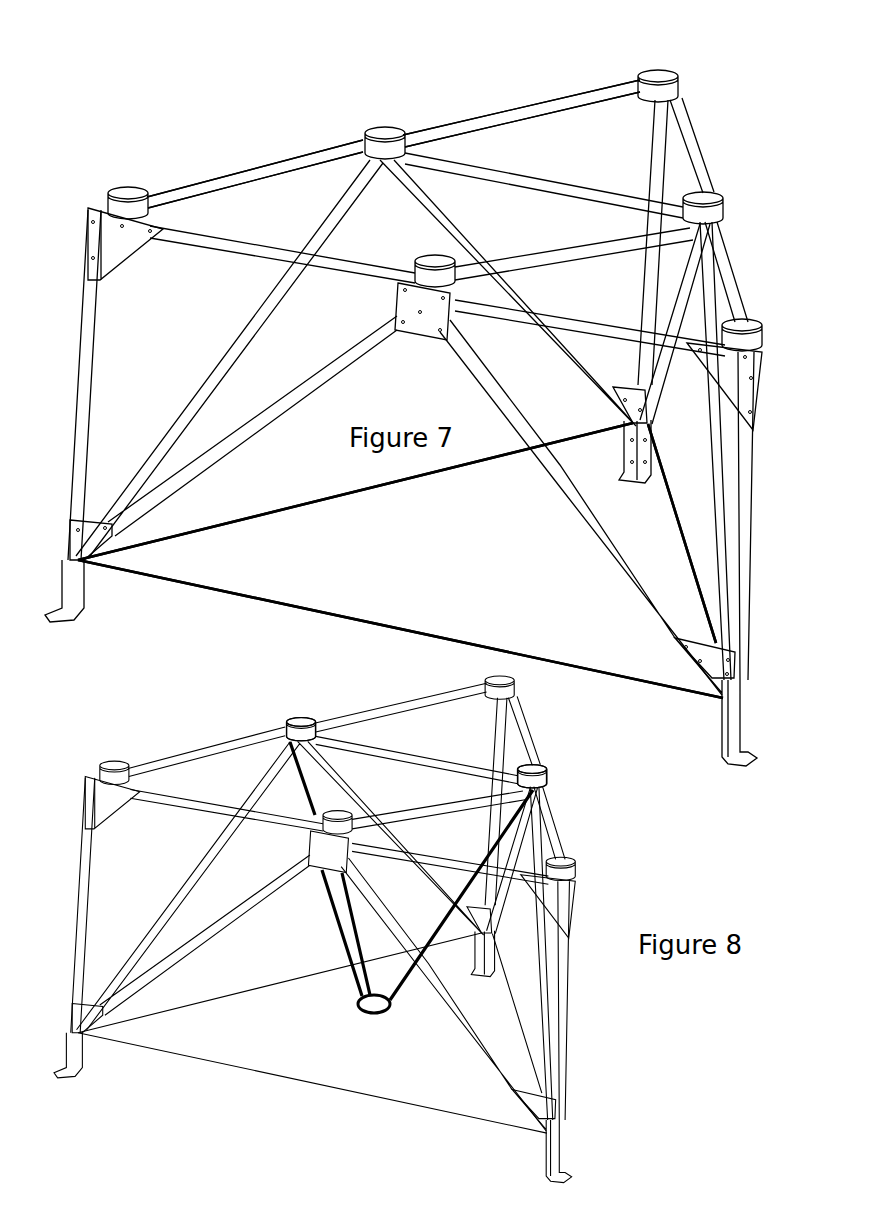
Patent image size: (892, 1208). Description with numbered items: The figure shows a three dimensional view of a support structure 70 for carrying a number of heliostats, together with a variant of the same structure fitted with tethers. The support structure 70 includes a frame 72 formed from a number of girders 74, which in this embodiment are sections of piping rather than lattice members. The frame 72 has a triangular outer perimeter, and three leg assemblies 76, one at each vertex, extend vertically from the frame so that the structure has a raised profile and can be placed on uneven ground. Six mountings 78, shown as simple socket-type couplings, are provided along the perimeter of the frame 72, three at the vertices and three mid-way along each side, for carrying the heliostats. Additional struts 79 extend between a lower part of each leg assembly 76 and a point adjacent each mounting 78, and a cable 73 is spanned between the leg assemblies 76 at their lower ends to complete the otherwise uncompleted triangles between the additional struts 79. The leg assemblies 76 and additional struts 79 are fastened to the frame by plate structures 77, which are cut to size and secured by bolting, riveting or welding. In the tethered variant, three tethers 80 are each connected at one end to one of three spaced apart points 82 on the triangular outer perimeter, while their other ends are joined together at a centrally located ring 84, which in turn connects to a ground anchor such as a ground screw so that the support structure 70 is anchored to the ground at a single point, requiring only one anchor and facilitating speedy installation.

In FIG. 7, the support structure 70 is at (252, 135).
In FIG. 7, the frame 72 is at (490, 122).
In FIG. 7, the cable 73 is at (282, 605).
In FIG. 7, the girder 74 is at (448, 137).
In FIG. 7, the leg assembly 76 is at (82, 430).
In FIG. 7, the plate structure 77 is at (110, 240).
In FIG. 7, the mounting 78 is at (124, 186).
In FIG. 7, the additional strut 79 is at (288, 405).
In FIG. 8, the tether 80 is at (330, 920).
In FIG. 8, the spaced apart point 82 is at (287, 732).
In FIG. 8, the ring 84 is at (388, 1012).